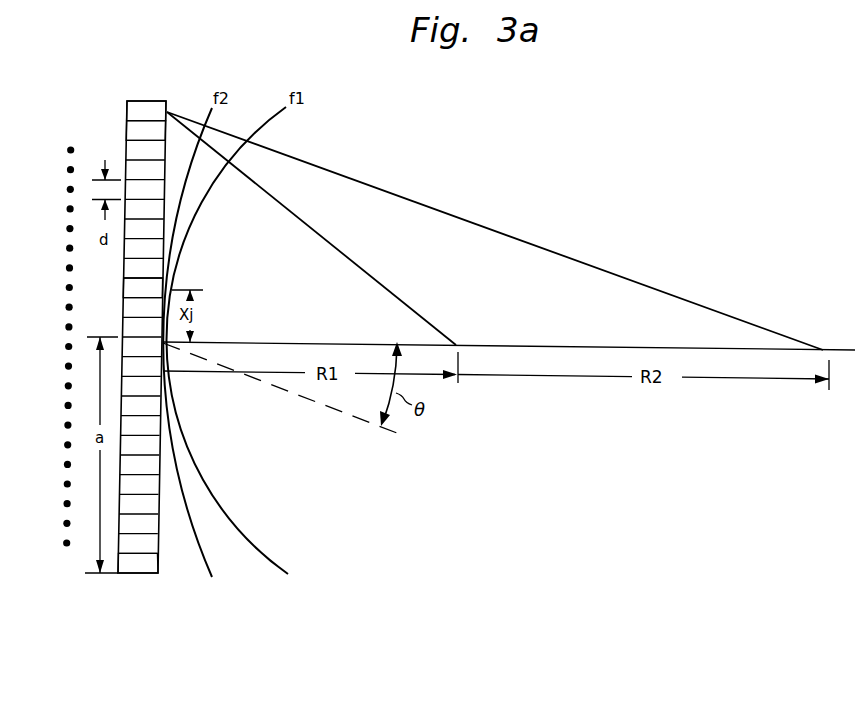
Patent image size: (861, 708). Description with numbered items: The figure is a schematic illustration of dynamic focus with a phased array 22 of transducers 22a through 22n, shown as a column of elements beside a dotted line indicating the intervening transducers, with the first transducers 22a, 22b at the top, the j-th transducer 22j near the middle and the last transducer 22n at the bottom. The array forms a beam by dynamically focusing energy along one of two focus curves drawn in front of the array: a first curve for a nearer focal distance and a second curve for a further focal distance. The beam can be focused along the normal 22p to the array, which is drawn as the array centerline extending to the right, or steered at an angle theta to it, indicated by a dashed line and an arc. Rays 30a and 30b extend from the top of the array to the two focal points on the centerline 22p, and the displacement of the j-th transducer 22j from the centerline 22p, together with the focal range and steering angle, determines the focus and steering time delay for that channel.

The phased array 22 is at (138, 587).
The transducer 22a is at (127, 112).
The transducer 22b is at (127, 133).
The j-th transducer 22j is at (123, 290).
The transducer 22n is at (118, 566).
The normal to the array 22p is at (534, 345).
The ray to first focal point 30a is at (410, 305).
The ray to second focal point 30b is at (485, 228).